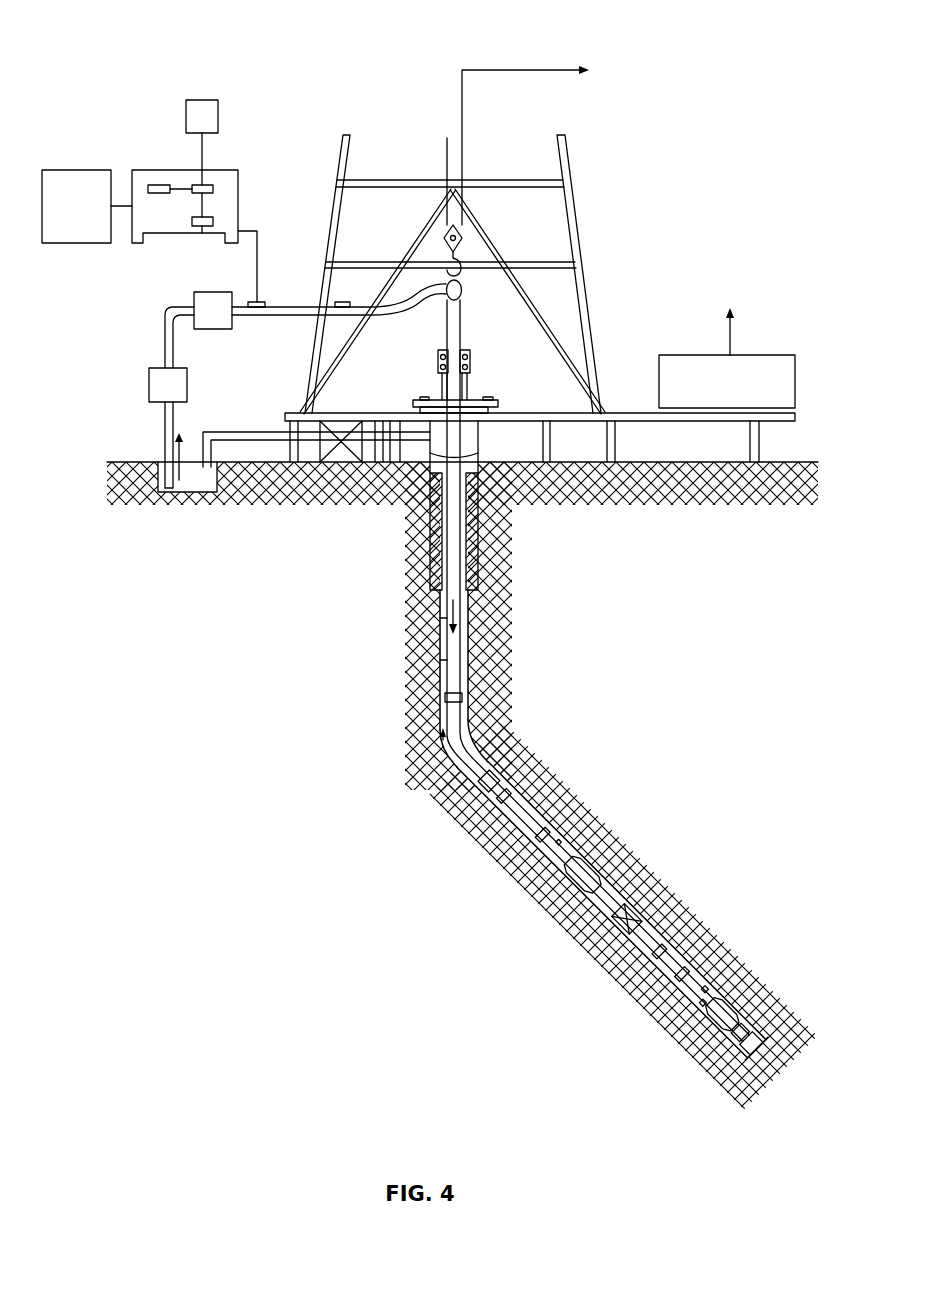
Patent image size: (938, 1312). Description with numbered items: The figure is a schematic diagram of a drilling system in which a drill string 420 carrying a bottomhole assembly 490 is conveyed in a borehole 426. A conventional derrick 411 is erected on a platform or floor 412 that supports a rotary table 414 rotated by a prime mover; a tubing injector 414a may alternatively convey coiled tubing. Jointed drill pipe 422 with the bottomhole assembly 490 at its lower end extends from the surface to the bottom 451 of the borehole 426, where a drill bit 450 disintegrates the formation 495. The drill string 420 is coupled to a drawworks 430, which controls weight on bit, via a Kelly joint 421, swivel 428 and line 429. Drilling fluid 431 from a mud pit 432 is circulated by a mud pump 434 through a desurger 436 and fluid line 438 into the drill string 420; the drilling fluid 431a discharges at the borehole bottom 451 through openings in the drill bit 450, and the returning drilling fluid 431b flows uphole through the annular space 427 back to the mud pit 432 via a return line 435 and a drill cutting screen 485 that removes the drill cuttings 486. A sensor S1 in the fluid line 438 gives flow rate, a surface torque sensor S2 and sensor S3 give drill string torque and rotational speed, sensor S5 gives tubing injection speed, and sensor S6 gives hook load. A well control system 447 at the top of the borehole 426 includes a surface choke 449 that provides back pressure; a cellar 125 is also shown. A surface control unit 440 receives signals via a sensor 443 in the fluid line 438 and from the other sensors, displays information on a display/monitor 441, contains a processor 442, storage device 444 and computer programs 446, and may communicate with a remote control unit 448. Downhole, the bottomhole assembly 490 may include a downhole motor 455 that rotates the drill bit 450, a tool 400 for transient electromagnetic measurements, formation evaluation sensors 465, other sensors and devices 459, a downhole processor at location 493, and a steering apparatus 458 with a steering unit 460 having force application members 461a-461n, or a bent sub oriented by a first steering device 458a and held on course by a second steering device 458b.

The tool 400 is at (120, 34).
The display/monitor 441 is at (190, 100).
The remote control unit 448 is at (78, 170).
The surface control unit 440 is at (178, 170).
The processor 442 is at (155, 185).
The storage device 444 is at (210, 185).
The computer programs 446 is at (200, 226).
The sensor 443 is at (250, 302).
The desurger 436 is at (194, 303).
The fluid line 438 is at (255, 316).
The mud pump 434 is at (149, 385).
The drilling fluid 431 is at (160, 462).
The mud pit 432 is at (180, 494).
The drill cutting screen 485 is at (320, 466).
The return line 435 is at (400, 465).
The derrick 411 is at (587, 280).
The platform or floor 412 is at (601, 412).
The drawworks 430 is at (752, 355).
The line 429 is at (463, 162).
The sensor S6 is at (445, 268).
The swivel 428 is at (446, 312).
The sensor S1 is at (335, 304).
The sensor S5 is at (462, 322).
The Kelly joint 421 is at (462, 338).
The tubing injector 414a is at (470, 358).
The rotary table 414 is at (470, 398).
The sensor S3 is at (420, 398).
The surface torque sensor S2 is at (493, 400).
The well control system 447 is at (422, 365).
The cellar 125 is at (487, 411).
The surface choke 449 is at (476, 470).
The drilling fluid 431a is at (440, 608).
The drill pipe 422 is at (440, 657).
The drill cuttings 486 is at (470, 650).
The drill string 420 is at (470, 682).
The borehole 426 is at (472, 745).
The annular space 427 is at (503, 762).
The returning drilling fluid 431b is at (446, 752).
The downhole motor 455 is at (543, 812).
The bottomhole assembly 490 is at (682, 806).
The formation 495 is at (730, 864).
The downhole processor location 493 is at (560, 888).
The formation evaluation sensors 465 is at (608, 935).
The force application members 461a-461n is at (740, 988).
The steering unit 460 is at (706, 1018).
The steering apparatus 458 is at (752, 1024).
The drill bit 450 is at (768, 1035).
The second steering device 458b is at (716, 1030).
The first steering device 458a is at (733, 1052).
The sensors and devices 459 is at (746, 1070).
The borehole bottom 451 is at (752, 1086).